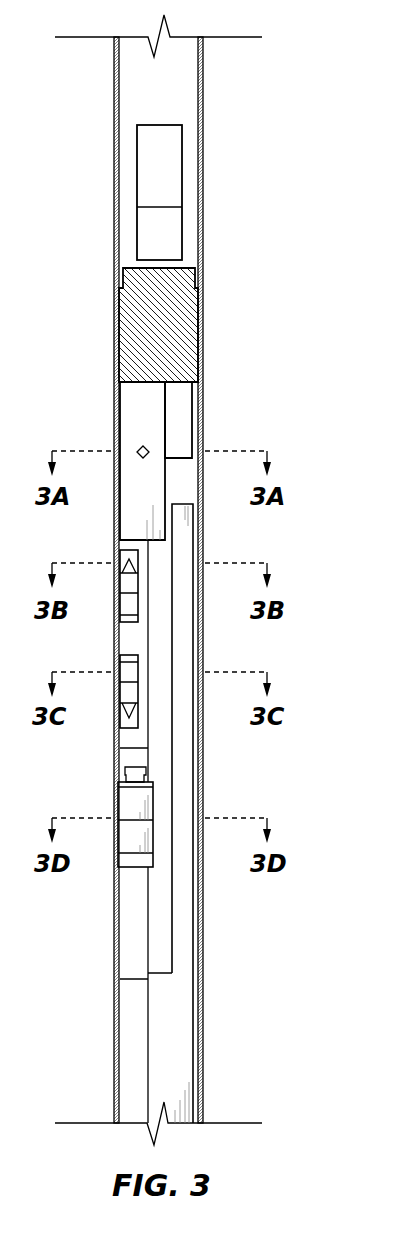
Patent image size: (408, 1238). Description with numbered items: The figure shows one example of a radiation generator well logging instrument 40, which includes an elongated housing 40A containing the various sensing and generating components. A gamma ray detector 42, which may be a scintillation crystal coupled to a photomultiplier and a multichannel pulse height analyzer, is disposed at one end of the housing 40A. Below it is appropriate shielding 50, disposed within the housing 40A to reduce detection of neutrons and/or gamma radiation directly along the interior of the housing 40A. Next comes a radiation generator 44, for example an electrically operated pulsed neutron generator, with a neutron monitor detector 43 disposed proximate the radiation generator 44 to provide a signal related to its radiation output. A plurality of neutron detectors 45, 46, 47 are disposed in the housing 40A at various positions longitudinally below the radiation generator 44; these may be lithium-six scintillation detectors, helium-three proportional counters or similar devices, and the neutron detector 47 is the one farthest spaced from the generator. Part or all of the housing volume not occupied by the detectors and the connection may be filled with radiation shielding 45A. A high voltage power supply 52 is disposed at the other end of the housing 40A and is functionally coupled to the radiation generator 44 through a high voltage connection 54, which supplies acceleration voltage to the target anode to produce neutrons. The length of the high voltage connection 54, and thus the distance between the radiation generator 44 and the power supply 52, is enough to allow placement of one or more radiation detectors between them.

The well logging instrument 40 is at (259, 76).
The elongated housing 40A is at (204, 227).
The gamma ray detector 42 is at (170, 165).
The neutron monitor detector 43 is at (182, 417).
The radiation generator 44 is at (128, 410).
The neutron detector 45 is at (128, 585).
The radiation shielding 45A is at (148, 622).
The neutron detector 46 is at (128, 692).
The neutron detector 47 is at (128, 837).
The shielding 50 is at (188, 330).
The high voltage power supply 52 is at (182, 1038).
The high voltage connection 54 is at (182, 902).